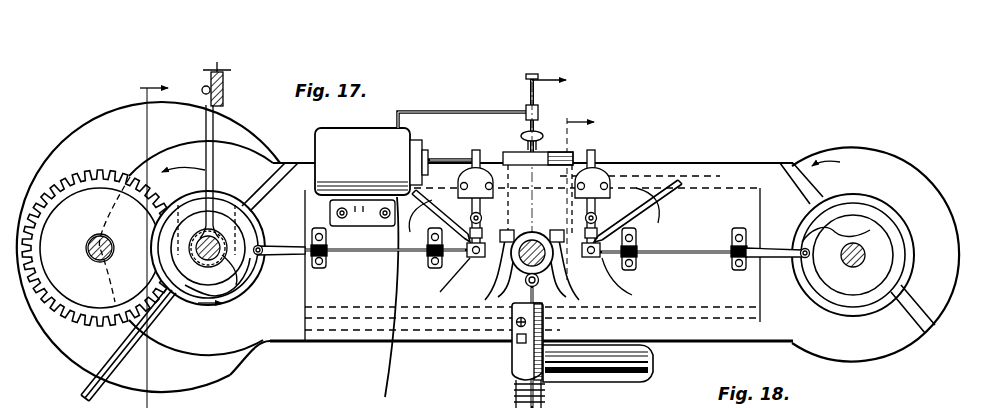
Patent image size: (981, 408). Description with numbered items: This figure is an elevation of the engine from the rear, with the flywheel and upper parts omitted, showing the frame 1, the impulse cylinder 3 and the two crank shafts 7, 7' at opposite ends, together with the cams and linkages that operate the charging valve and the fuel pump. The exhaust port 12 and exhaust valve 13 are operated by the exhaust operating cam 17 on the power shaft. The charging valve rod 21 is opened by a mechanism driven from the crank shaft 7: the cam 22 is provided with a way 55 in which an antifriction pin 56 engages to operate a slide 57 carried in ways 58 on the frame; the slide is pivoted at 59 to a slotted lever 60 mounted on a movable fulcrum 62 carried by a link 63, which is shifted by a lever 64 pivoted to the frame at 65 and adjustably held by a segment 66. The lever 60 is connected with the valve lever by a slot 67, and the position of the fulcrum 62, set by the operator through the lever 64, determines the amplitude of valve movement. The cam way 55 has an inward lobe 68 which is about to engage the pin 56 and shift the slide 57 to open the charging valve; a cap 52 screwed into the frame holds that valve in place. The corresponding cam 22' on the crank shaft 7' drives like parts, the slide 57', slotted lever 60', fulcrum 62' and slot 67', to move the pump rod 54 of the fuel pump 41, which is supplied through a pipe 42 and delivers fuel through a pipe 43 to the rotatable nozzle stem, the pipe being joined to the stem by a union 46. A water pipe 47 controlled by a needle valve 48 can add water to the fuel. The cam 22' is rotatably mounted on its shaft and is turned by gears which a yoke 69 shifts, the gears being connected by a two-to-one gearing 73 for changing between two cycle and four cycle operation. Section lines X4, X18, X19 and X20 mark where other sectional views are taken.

The frame 1 is at (300, 338).
The impulse cylinder 3 is at (438, 300).
The crank shaft 7 is at (853, 291).
The crank shaft 7' is at (216, 248).
The exhaust port 12 is at (598, 382).
The exhaust valve 13 is at (512, 376).
The exhaust operating cam 17 is at (508, 262).
The charging valve rod 21 is at (598, 150).
The cam 22 is at (866, 255).
The cam 22' is at (149, 247).
The fuel pump 41 is at (358, 137).
The pipe 42 is at (388, 390).
The pipe 43 is at (520, 112).
The union 46 is at (552, 128).
The water pipe 47 is at (540, 100).
The needle valve 48 is at (527, 78).
The cap 52 is at (505, 152).
The pump rod 54 is at (457, 136).
The cam way 55 is at (195, 293).
The antifriction pin 56 is at (262, 242).
The slide 57 is at (642, 266).
The slide 57' is at (415, 271).
The ways 58 is at (328, 246).
The pivot 59 is at (440, 283).
The slotted lever 60 is at (614, 198).
The slotted lever 60' is at (496, 200).
The movable fulcrum 62 is at (567, 208).
The movable fulcrum 62' is at (496, 216).
The link 63 is at (482, 233).
The lever 64 is at (422, 200).
The pivot 65 is at (655, 172).
The segment 66 is at (632, 213).
The slot 67 is at (648, 117).
The slot 67' is at (453, 111).
The lobe 68 is at (224, 256).
The yoke 69 is at (215, 128).
The two-to-one gearing 73 is at (100, 248).
The section line X4 is at (552, 69).
The section line X18 is at (159, 232).
The section line X19 is at (590, 192).
The section line X20 is at (218, 189).